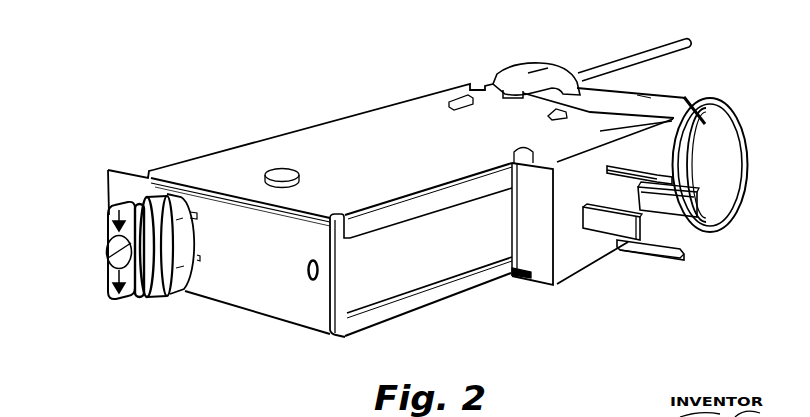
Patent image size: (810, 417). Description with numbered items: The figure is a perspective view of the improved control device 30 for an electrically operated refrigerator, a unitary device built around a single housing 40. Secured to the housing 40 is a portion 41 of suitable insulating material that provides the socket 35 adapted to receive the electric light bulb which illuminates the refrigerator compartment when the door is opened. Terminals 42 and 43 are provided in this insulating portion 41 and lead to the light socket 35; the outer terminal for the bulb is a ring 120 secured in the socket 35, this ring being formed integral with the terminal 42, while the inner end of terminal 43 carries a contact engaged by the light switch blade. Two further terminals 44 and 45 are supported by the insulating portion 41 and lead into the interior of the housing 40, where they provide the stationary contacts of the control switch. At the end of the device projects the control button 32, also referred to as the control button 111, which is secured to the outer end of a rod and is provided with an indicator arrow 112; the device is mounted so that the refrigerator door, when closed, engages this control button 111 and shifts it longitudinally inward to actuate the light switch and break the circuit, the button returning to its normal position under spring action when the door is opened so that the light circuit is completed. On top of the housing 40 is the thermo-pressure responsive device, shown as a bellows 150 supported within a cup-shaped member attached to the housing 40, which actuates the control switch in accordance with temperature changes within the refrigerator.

The control device 30 is at (350, 86).
The housing 40 is at (397, 107).
The bellows 150 is at (512, 76).
The ring 120 is at (698, 121).
The socket 35 is at (731, 130).
The insulating portion 41 is at (542, 270).
The terminal 42 is at (697, 215).
The terminal 43 is at (605, 226).
The terminal 44 is at (647, 170).
The terminal 45 is at (673, 261).
The control button 32 is at (162, 196).
The control button 111 is at (175, 283).
The indicator arrow 112 is at (117, 224).